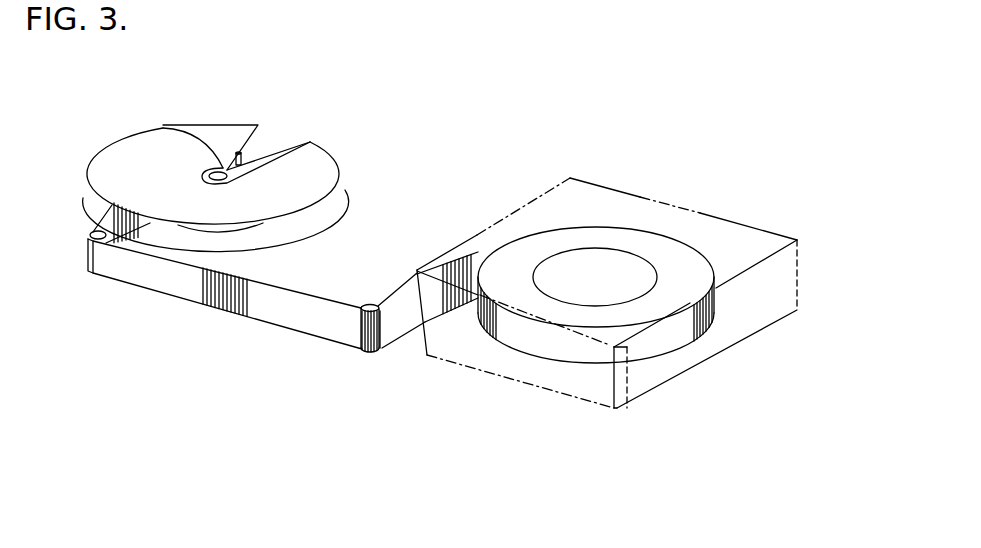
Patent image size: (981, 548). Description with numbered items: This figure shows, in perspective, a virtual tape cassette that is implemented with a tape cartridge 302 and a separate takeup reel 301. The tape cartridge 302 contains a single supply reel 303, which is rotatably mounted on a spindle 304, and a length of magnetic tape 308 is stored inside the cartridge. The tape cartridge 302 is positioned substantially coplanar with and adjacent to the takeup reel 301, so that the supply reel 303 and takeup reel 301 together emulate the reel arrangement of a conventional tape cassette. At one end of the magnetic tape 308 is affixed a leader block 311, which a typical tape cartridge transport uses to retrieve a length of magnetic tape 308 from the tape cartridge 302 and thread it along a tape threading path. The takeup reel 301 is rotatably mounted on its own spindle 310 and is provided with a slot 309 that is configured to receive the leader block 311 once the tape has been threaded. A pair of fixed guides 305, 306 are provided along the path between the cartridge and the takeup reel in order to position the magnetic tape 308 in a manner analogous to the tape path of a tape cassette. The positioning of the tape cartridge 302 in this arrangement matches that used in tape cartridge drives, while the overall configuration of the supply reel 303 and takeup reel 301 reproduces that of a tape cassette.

The takeup reel 301 is at (342, 180).
The tape cartridge 302 is at (766, 232).
The supply reel 303 is at (698, 247).
The spindle 304 is at (597, 278).
The fixed guide 305 is at (363, 307).
The fixed guide 306 is at (96, 232).
The magnetic tape 308 is at (327, 322).
The slot 309 is at (283, 147).
The spindle 310 is at (208, 176).
The leader block 311 is at (163, 125).